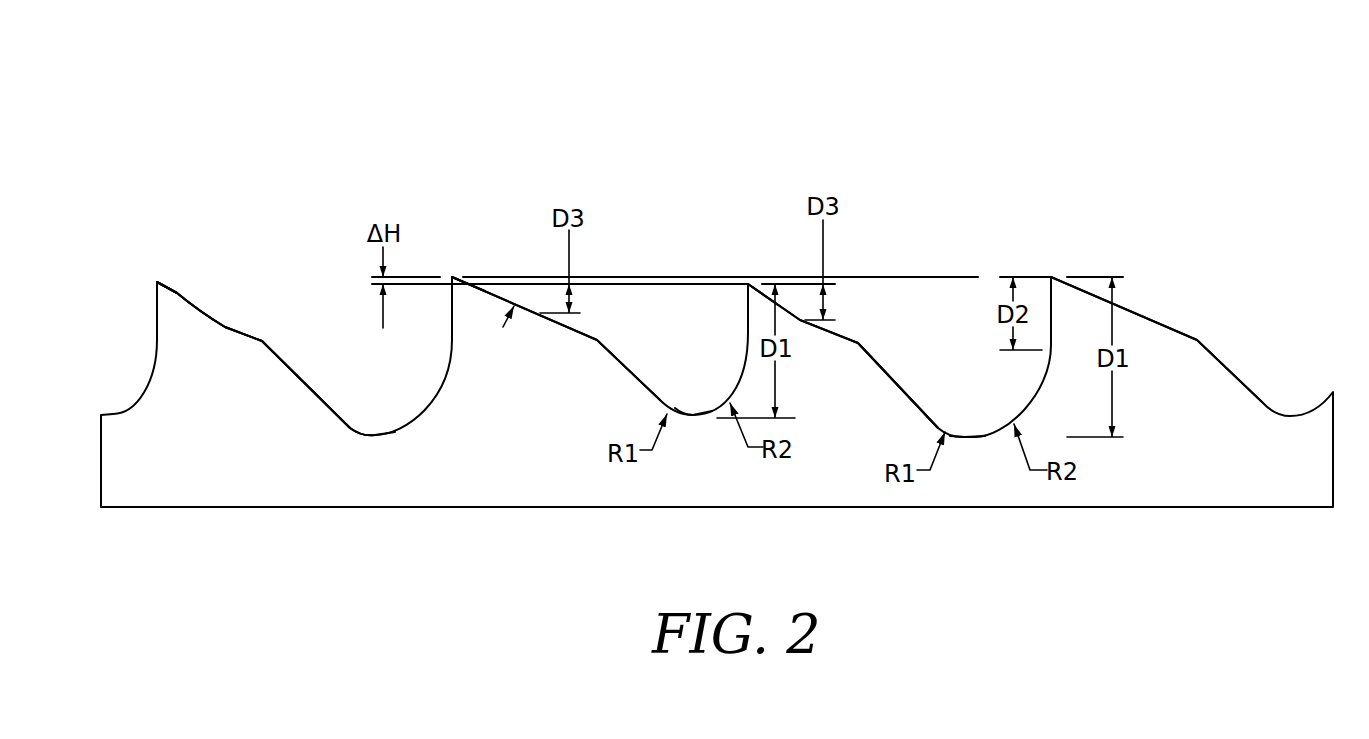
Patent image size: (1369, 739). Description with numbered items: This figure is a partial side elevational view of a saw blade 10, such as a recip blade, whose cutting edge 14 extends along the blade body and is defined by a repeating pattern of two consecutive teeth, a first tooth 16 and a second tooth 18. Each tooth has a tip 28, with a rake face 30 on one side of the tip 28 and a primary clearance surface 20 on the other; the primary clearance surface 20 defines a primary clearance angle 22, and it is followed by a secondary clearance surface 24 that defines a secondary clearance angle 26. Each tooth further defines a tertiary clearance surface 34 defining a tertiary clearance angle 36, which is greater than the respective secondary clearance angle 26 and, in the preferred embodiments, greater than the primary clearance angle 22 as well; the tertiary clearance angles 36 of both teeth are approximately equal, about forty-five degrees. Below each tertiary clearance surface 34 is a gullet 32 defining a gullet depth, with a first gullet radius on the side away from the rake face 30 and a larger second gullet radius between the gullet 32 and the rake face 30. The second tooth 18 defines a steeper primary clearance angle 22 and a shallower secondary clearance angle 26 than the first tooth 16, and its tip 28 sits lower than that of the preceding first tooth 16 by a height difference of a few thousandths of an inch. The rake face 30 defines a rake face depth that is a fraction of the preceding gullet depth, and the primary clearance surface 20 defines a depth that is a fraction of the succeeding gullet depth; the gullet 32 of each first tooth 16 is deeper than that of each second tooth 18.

The saw blade 10 is at (128, 126).
The cutting edge 14 is at (485, 232).
The first tooth 16 is at (524, 358).
The second tooth 18 is at (193, 358).
The primary clearance surface 20 is at (175, 291).
The primary clearance angle 22 is at (516, 273).
The secondary clearance surface 24 is at (227, 323).
The secondary clearance angle 26 is at (600, 279).
The tip 28 is at (157, 281).
The rake face 30 is at (155, 328).
The gullet 32 is at (375, 433).
The tertiary clearance surface 34 is at (277, 353).
The tertiary clearance angle 36 is at (677, 280).